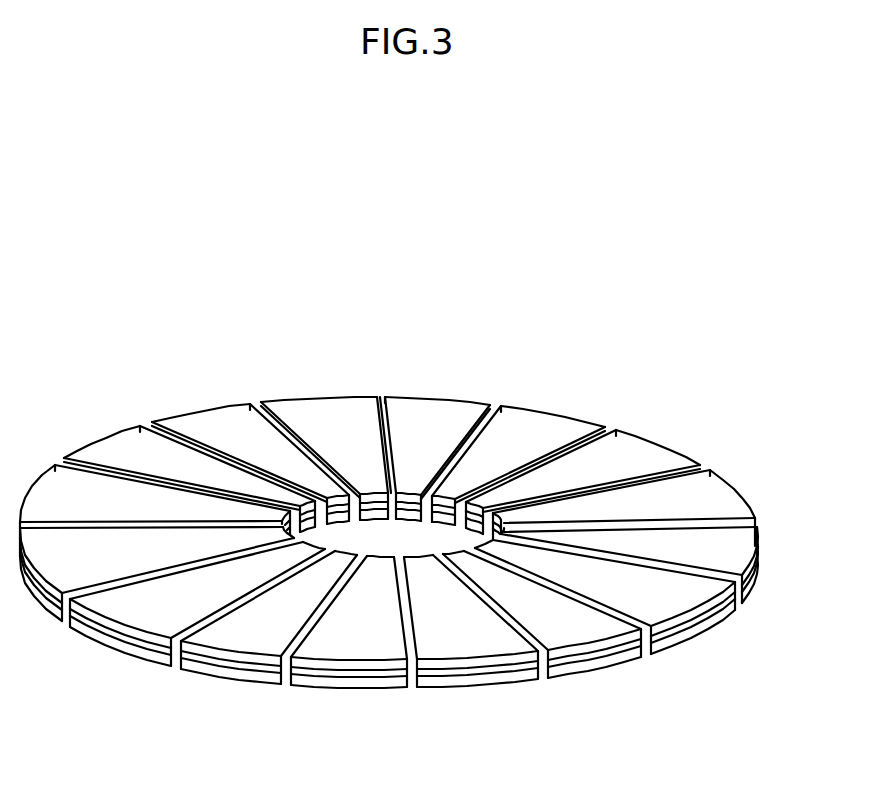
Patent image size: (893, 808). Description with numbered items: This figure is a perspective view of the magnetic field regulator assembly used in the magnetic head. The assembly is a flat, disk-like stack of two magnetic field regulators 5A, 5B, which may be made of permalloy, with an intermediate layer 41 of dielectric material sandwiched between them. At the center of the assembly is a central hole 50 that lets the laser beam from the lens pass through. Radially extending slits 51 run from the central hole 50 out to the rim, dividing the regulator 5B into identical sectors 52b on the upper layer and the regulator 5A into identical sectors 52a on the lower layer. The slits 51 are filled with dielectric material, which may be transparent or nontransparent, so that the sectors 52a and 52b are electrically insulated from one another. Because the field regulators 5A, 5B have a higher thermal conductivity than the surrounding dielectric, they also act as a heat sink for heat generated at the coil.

The magnetic field regulator 5A is at (752, 608).
The magnetic field regulator 5B is at (748, 487).
The intermediate layer 41 is at (645, 652).
The central hole 50 is at (412, 530).
The slit 51 is at (522, 476).
The sector 52a is at (592, 660).
The sector 52b is at (530, 430).